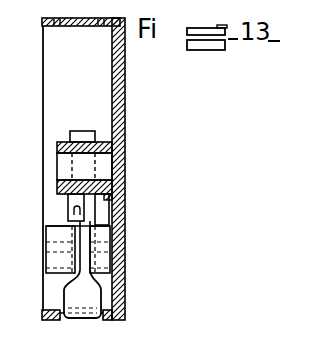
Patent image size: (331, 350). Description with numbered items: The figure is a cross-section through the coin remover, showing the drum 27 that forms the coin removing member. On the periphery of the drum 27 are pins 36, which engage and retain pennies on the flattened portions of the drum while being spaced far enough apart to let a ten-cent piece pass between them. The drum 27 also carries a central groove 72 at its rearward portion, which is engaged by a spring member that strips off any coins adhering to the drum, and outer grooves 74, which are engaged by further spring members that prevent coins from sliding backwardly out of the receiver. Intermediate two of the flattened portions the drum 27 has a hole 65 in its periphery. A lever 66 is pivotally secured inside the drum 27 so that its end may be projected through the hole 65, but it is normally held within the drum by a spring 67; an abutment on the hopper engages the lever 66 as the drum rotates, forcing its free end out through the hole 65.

The outer grooves 74 is at (57, 18).
The central groove 72 is at (86, 18).
The pins 36 is at (118, 21).
The drum 27 is at (112, 101).
The spring 67 is at (70, 206).
The lever 66 is at (68, 293).
The hole 65 is at (60, 319).